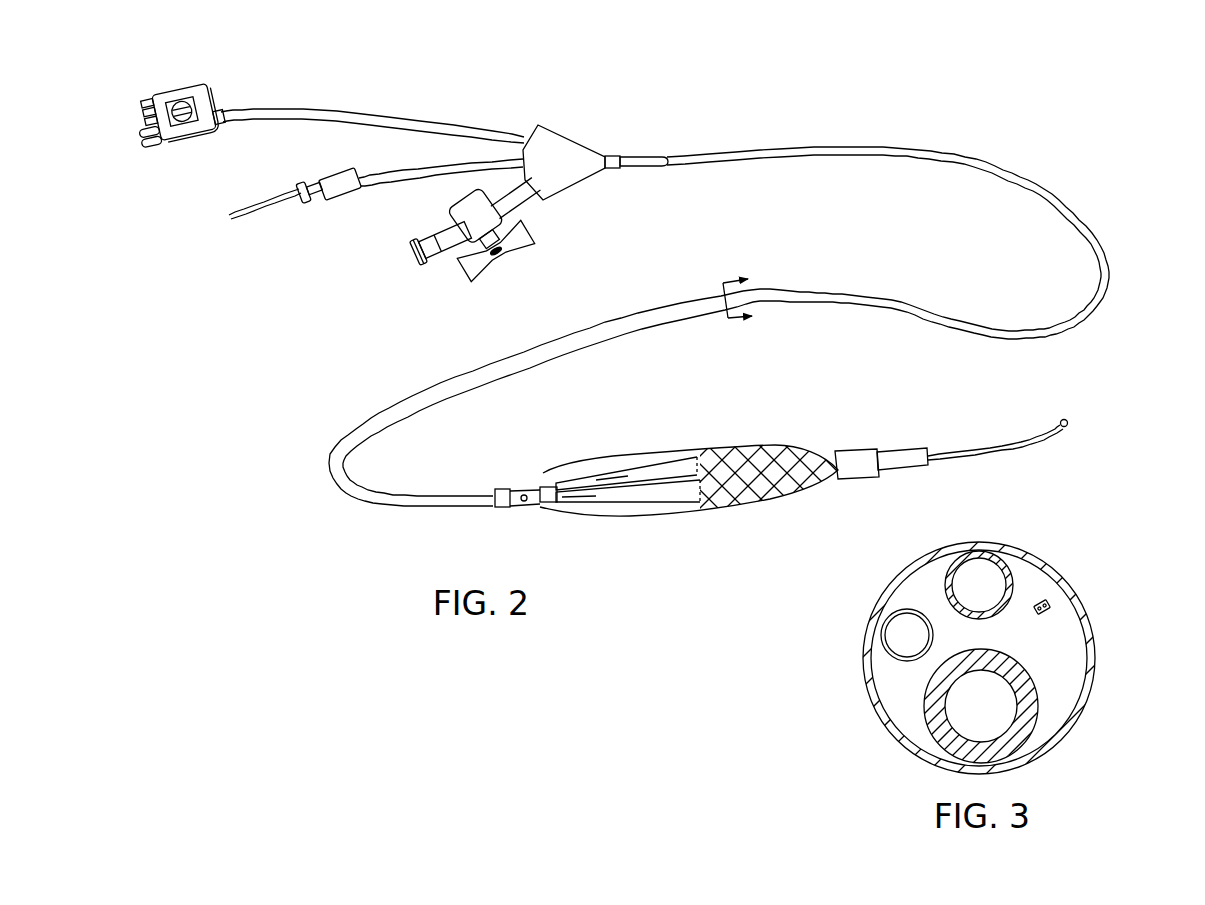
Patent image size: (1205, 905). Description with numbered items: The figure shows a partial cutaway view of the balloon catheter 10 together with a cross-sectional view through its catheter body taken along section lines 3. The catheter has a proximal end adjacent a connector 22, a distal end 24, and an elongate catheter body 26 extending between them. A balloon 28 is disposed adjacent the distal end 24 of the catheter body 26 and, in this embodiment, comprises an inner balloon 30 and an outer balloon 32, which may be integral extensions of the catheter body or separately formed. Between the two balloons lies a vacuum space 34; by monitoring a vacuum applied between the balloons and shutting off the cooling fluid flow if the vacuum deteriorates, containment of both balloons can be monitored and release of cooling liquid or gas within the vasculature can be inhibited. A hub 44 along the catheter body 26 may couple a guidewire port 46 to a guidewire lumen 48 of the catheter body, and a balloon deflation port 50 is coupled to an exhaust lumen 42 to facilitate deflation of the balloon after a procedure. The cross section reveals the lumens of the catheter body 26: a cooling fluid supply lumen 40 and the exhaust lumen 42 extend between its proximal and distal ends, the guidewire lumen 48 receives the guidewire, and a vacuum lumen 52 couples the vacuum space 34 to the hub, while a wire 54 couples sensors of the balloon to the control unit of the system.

In FIG. 2, the catheter 10 is at (978, 110).
In FIG. 2, the connector 22 is at (179, 132).
In FIG. 2, the guidewire port 46 is at (321, 198).
In FIG. 2, the balloon deflation port 50 is at (437, 253).
In FIG. 2, the hub 44 is at (562, 180).
In FIG. 2, the catheter body 26 is at (829, 153).
In FIG. 3, the catheter body 26 is at (922, 650).
In FIG. 2, the section lines 3- 3 is at (748, 295).
In FIG. 2, the distal end 24 is at (493, 489).
In FIG. 2, the vacuum space 34 is at (546, 480).
In FIG. 2, the inner balloon 30 is at (658, 457).
In FIG. 2, the outer balloon 32 is at (616, 456).
In FIG. 2, the balloon 28 is at (716, 499).
In FIG. 3, the exhaust lumen 42 is at (1068, 686).
In FIG. 3, the vacuum lumen 52 is at (981, 578).
In FIG. 3, the cooling fluid supply lumen 40 is at (893, 637).
In FIG. 3, the guidewire lumen 48 is at (958, 710).
In FIG. 3, the wire 54 is at (1052, 606).